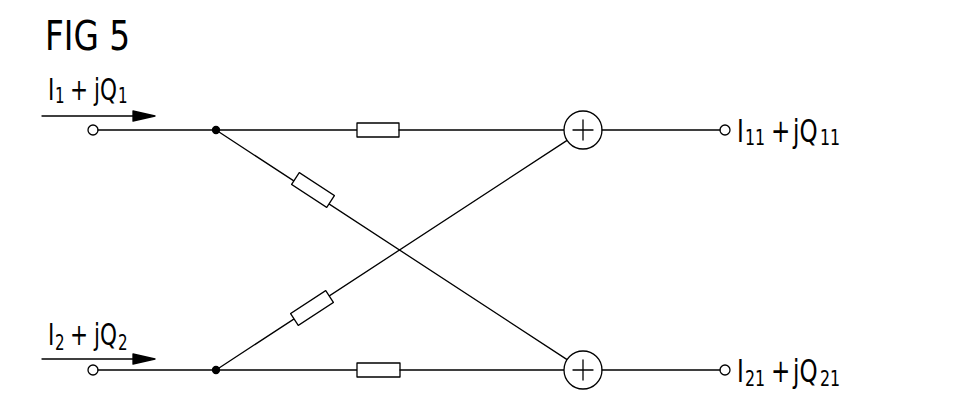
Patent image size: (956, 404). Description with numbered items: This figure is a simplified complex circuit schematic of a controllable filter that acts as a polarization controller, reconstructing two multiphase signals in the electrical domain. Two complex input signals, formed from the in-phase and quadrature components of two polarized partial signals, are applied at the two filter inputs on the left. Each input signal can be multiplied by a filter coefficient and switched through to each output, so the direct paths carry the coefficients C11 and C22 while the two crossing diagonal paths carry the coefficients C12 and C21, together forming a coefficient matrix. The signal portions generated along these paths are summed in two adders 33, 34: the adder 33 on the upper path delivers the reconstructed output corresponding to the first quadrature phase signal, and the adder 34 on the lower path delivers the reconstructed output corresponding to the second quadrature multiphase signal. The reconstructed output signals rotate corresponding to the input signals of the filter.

The adder 33 is at (584, 149).
The adder 34 is at (586, 353).
The filter coefficient C11 is at (380, 122).
The filter coefficient C12 is at (322, 182).
The filter coefficient C21 is at (308, 298).
The filter coefficient C22 is at (378, 362).